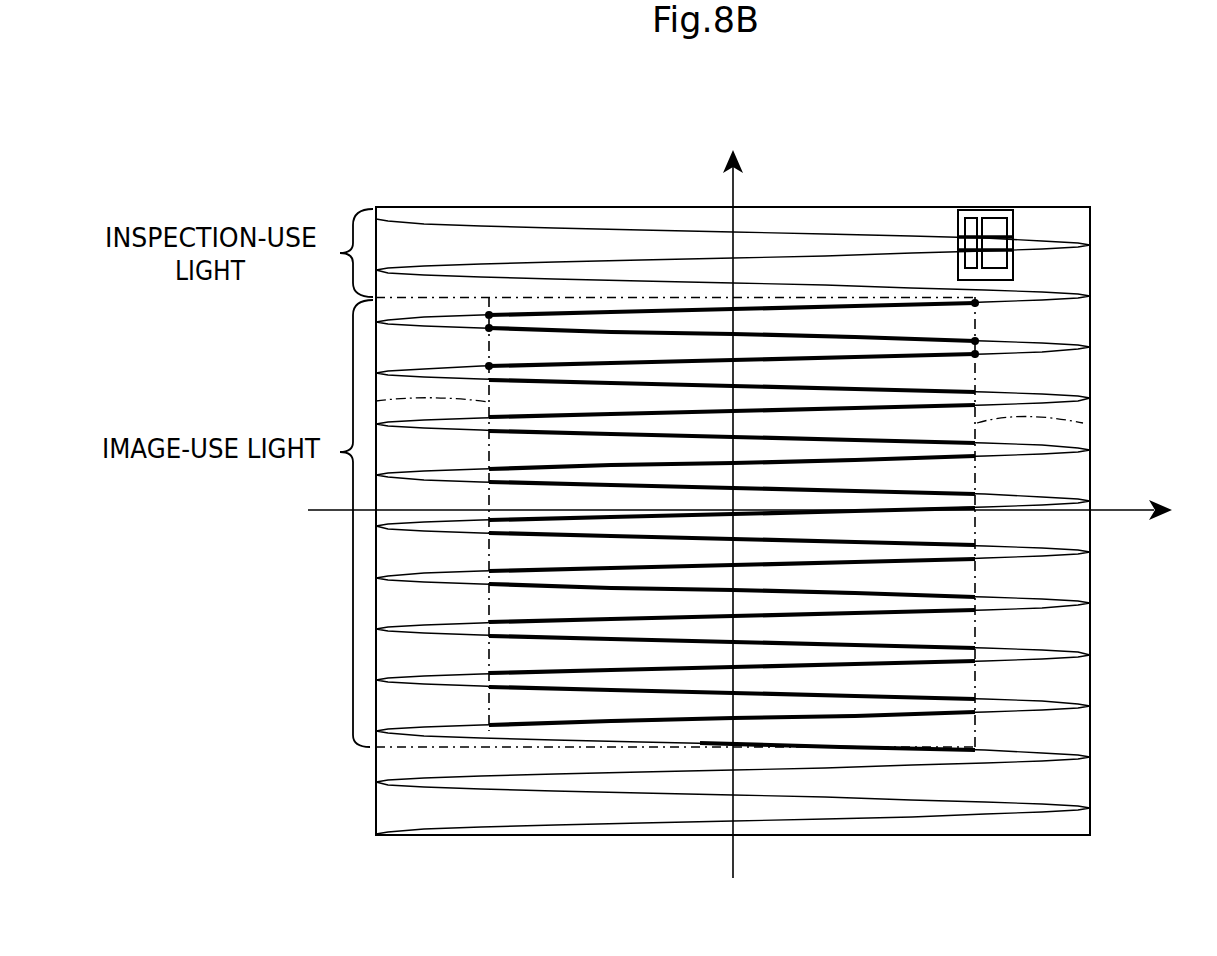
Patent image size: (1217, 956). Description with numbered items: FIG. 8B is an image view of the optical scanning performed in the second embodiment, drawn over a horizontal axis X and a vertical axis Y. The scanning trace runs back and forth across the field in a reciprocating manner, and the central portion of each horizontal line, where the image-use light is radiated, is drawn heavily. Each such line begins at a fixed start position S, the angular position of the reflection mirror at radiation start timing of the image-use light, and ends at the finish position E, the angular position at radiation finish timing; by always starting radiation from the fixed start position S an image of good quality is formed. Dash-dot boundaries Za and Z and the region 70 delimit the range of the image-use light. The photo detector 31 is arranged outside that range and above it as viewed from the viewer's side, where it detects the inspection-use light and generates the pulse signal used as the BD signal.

The photo detector 31 is at (990, 210).
The scanning trajectory region 70 is at (1083, 423).
The finish position of outgoing-path scanning E is at (730, 337).
The start position of outgoing-path scanning S is at (730, 336).
The inspection light region boundary Za is at (376, 401).
The image light region boundary Z is at (353, 736).
The X axis X is at (752, 512).
The Y axis Y is at (733, 498).